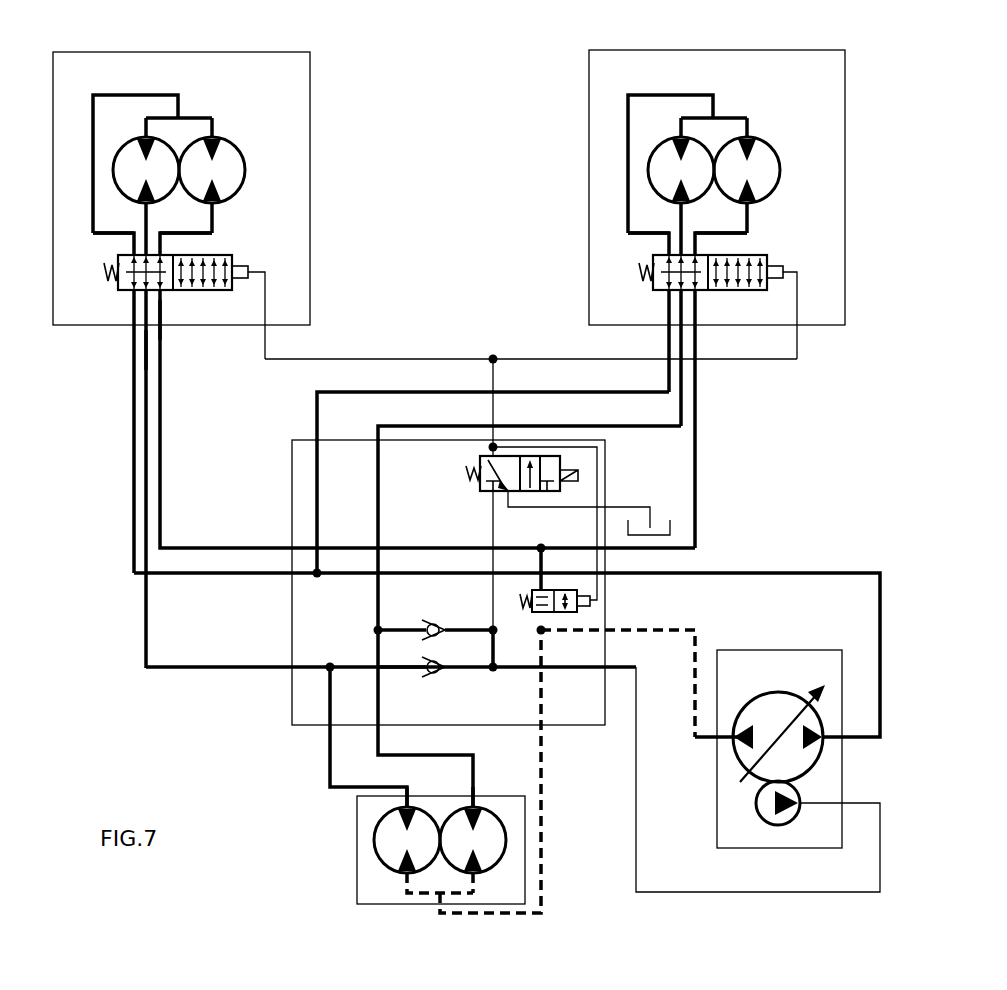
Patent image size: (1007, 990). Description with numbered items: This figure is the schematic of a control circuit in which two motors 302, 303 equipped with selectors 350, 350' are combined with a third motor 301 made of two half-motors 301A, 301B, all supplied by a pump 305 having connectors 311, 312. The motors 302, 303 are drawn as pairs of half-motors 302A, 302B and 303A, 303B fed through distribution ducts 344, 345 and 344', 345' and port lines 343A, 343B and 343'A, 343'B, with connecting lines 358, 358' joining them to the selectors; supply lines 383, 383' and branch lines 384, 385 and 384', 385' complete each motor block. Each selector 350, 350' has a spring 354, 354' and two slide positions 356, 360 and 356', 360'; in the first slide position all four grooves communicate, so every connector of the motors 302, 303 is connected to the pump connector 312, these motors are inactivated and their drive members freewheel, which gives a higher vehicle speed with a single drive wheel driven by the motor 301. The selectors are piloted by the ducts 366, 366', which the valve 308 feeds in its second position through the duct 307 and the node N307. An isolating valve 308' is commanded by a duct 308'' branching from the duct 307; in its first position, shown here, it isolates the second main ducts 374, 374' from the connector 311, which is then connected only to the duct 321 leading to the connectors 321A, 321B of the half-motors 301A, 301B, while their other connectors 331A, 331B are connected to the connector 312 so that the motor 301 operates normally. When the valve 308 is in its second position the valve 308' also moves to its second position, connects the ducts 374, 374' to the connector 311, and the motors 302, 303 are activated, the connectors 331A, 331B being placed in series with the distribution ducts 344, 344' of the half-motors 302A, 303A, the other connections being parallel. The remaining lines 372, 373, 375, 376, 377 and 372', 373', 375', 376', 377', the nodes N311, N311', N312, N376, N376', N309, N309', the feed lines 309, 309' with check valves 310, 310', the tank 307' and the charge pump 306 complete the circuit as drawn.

The motor 302 is at (276, 72).
The half-motor 302A is at (128, 158).
The second hydraulic motor 302B is at (232, 172).
The motor 303 is at (810, 70).
The half-motor 303A is at (662, 158).
The fourth hydraulic motor 303B is at (766, 172).
The motor inlet port line 343A is at (130, 158).
The motor inlet port line 343B is at (228, 150).
The motor inlet port line 343'A is at (699, 87).
The motor inlet port line 343'B is at (835, 121).
The distribution duct 344 is at (88, 201).
The motor outlet line 345 is at (297, 210).
The distribution duct 344' is at (610, 211).
The motor outlet line 345' is at (830, 205).
The connecting line 358 is at (171, 228).
The connecting line 358' is at (709, 228).
The supply line 383 is at (144, 131).
The supply line 383' is at (679, 129).
The branch line 384 is at (82, 232).
The branch line 385 is at (271, 232).
The branch line 384' is at (617, 237).
The branch line 385' is at (806, 232).
The selector 350 is at (262, 307).
The selector 350' is at (793, 307).
The valve spring 354 is at (94, 278).
The valve spring 354' is at (630, 278).
The first valve position 356 is at (120, 306).
The first valve position 356' is at (658, 307).
The second valve position 360 is at (235, 273).
The second valve position 360' is at (768, 270).
The duct 366 is at (379, 336).
The duct 366' is at (645, 338).
The node N307 is at (493, 355).
The hydraulic line 372 is at (108, 431).
The hydraulic line 373 is at (117, 479).
The second main duct 374 is at (200, 330).
The hydraulic line 375 is at (427, 419).
The hydraulic line 376 is at (188, 361).
The hydraulic line 377 is at (283, 612).
The hydraulic line 372' is at (636, 341).
The hydraulic line 373' is at (493, 469).
The second main duct 374' is at (758, 349).
The hydraulic line 375' is at (740, 439).
The hydraulic line 376' is at (714, 358).
The hydraulic line 377' is at (529, 616).
The duct 307 is at (561, 686).
The tank 307' is at (600, 496).
The valve 308 is at (495, 543).
The isolating valve 308' is at (604, 604).
The duct 308'' is at (543, 498).
The line node N311 is at (566, 550).
The line node N311' is at (638, 682).
The line node N312 is at (317, 578).
The line node N376 is at (391, 655).
The line node N376' is at (344, 635).
The line node N309 is at (519, 683).
The line node N309' is at (477, 627).
The feed line 309 is at (403, 685).
The feed line 309' is at (408, 611).
The check valve 310 is at (456, 680).
The check valve 310' is at (462, 636).
The pump 305 is at (770, 708).
The charge pump 306 is at (785, 826).
The pump connector 311 is at (736, 753).
The pump connector 312 is at (825, 750).
The motor 301 is at (365, 885).
The half-motor 301A is at (387, 846).
The half-motor 301B is at (495, 843).
The connector 331A is at (395, 814).
The connector 331B is at (485, 818).
The duct 321 is at (528, 915).
The connector 321A is at (400, 870).
The connector 321B is at (495, 863).